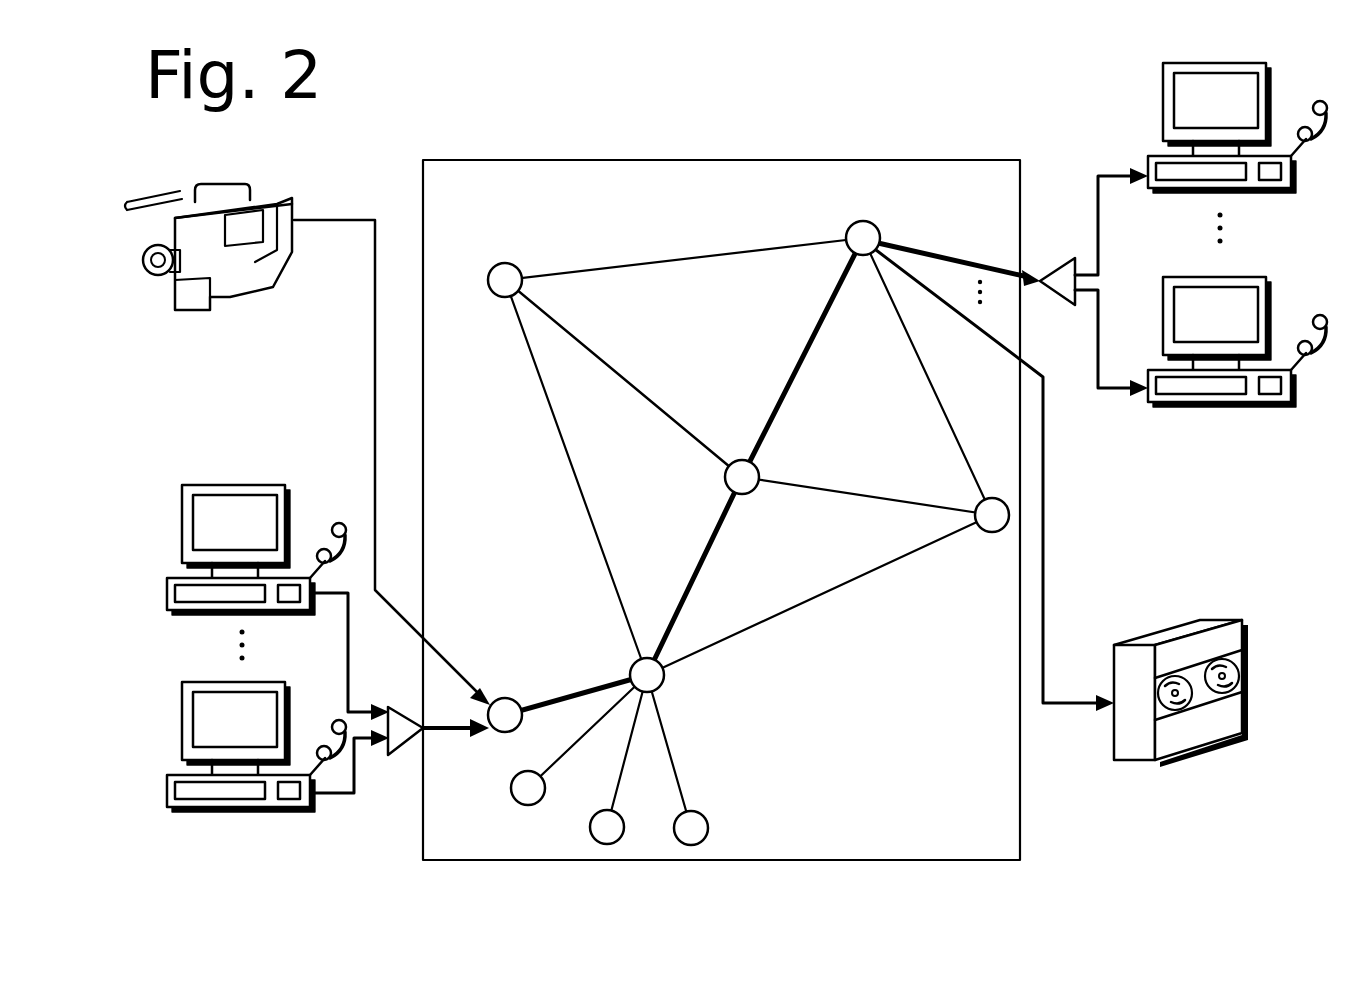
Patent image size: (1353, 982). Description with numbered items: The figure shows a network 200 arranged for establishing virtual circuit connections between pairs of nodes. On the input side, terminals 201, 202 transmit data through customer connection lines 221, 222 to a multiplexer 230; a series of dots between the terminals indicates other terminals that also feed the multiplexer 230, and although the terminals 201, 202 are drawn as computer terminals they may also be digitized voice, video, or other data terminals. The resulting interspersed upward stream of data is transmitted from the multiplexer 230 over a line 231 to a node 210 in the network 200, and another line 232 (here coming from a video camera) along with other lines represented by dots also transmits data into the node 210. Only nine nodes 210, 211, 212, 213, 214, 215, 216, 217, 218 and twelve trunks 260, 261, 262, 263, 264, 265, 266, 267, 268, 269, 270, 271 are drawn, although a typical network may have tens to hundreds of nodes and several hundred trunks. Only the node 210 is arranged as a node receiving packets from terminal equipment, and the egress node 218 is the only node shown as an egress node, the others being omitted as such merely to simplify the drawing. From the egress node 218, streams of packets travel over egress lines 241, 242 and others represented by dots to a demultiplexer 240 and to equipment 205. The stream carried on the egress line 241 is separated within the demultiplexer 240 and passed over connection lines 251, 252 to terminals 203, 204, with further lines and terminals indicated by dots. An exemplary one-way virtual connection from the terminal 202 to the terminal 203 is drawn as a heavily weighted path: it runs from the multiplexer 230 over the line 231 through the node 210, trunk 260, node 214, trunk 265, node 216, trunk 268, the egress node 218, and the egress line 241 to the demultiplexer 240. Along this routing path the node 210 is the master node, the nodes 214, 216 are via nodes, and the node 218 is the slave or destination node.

The network 200 is at (1018, 856).
The terminal 201 is at (181, 533).
The terminal 202 is at (181, 728).
The terminal 203 is at (1270, 95).
The terminal 204 is at (1268, 308).
The equipment 205 is at (1244, 658).
The node 210 is at (500, 704).
The node 211 is at (516, 794).
The node 212 is at (591, 817).
The node 213 is at (707, 812).
The node 214 is at (664, 661).
The node 215 is at (498, 261).
The node 216 is at (736, 460).
The node 217 is at (991, 532).
The egress node 218 is at (862, 221).
The customer connection line 221 is at (346, 663).
The customer connection line 222 is at (342, 806).
The multiplexer 230 is at (398, 708).
The line 231 is at (448, 736).
The line 232 is at (374, 342).
The demultiplexer 240 is at (1046, 275).
The egress line 241 is at (968, 260).
The egress line 242 is at (1043, 427).
The connection line 251 is at (1110, 188).
The connection line 252 is at (1114, 394).
The trunk 260 is at (582, 702).
The trunk 261 is at (572, 750).
The trunk 262 is at (626, 776).
The trunk 263 is at (688, 786).
The trunk 264 is at (556, 496).
The trunk 265 is at (686, 589).
The trunk 266 is at (818, 617).
The trunk 267 is at (766, 240).
The trunk 268 is at (824, 326).
The trunk 269 is at (892, 496).
The trunk 270 is at (600, 354).
The trunk 271 is at (914, 338).